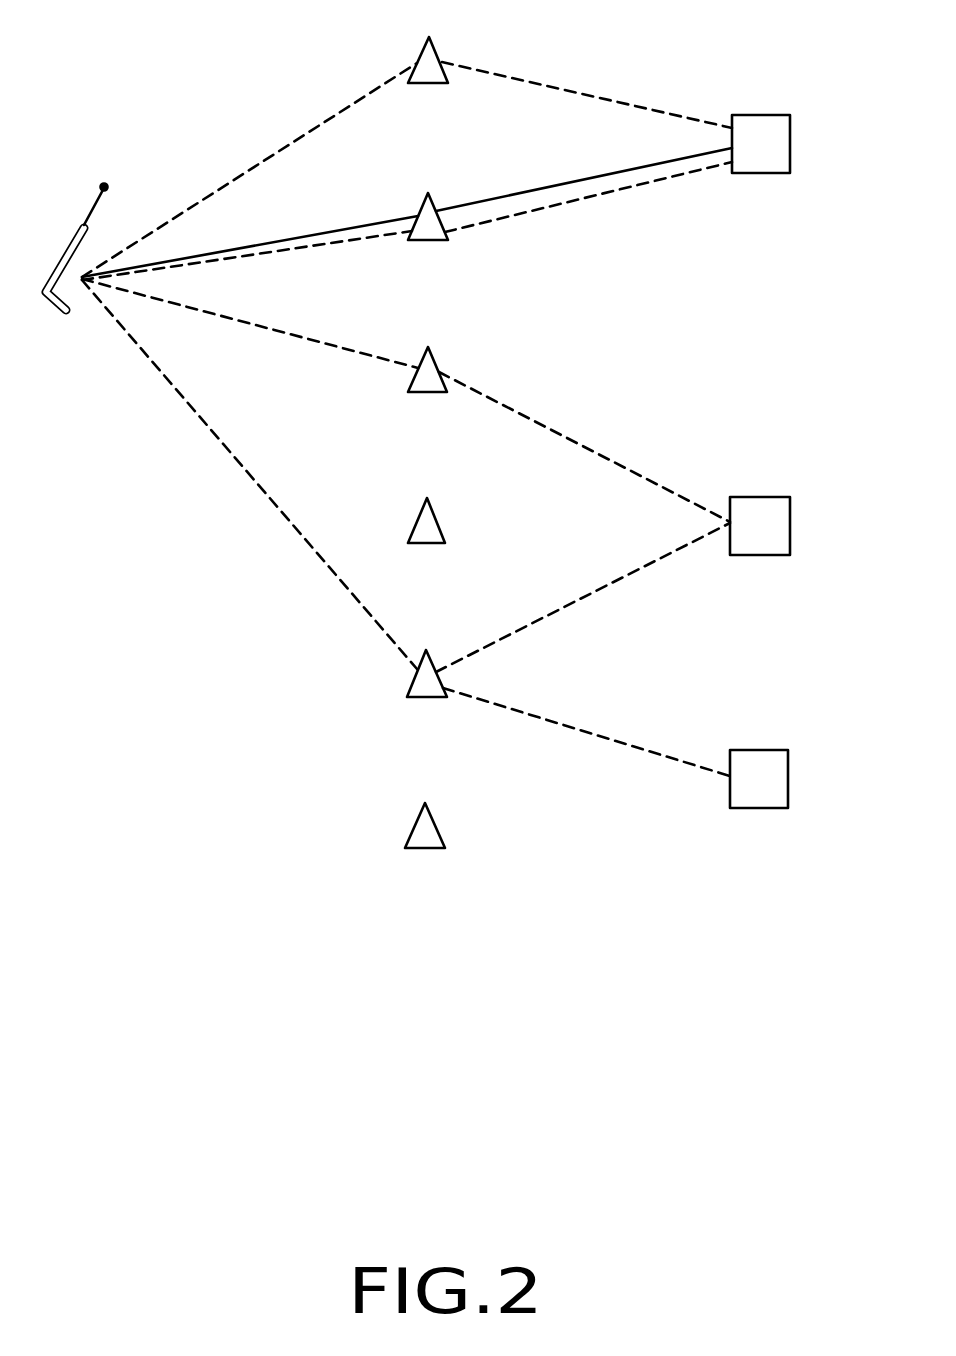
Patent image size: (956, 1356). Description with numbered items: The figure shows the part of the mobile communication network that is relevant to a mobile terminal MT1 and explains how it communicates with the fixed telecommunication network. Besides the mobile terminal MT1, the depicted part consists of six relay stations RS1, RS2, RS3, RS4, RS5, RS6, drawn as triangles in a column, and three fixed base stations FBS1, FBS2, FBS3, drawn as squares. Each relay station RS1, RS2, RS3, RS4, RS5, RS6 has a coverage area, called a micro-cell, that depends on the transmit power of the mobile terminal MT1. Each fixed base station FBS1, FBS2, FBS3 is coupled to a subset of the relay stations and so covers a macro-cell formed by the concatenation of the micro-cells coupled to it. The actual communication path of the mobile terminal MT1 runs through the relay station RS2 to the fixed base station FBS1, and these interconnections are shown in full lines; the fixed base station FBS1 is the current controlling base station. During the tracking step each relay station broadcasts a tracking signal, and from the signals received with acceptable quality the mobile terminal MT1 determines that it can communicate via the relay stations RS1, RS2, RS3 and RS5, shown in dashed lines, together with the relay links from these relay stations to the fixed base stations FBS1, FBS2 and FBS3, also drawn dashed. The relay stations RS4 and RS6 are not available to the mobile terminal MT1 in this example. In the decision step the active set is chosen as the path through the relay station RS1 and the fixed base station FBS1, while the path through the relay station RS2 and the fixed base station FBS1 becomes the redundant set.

The mobile terminal MT1 is at (70, 274).
The relay station RS1 is at (437, 41).
The relay station RS2 is at (436, 197).
The relay station RS3 is at (436, 350).
The relay station RS4 is at (436, 502).
The relay station RS5 is at (434, 655).
The relay station RS6 is at (433, 807).
The fixed base station FBS1 is at (787, 121).
The fixed base station FBS2 is at (786, 504).
The fixed base station FBS3 is at (786, 758).